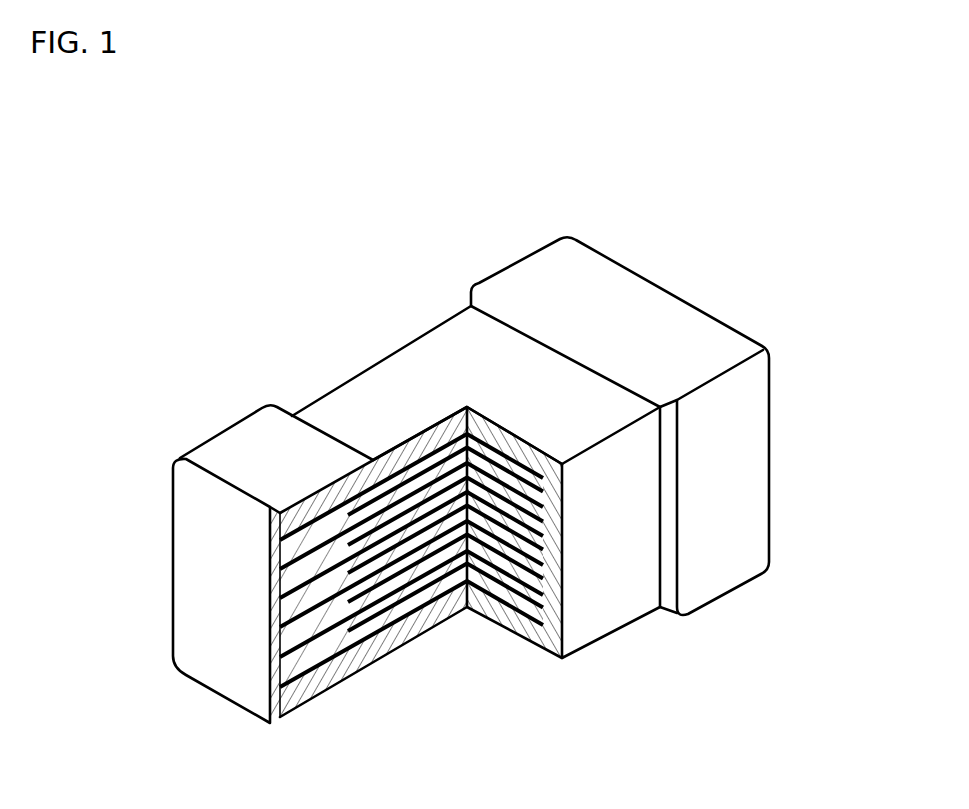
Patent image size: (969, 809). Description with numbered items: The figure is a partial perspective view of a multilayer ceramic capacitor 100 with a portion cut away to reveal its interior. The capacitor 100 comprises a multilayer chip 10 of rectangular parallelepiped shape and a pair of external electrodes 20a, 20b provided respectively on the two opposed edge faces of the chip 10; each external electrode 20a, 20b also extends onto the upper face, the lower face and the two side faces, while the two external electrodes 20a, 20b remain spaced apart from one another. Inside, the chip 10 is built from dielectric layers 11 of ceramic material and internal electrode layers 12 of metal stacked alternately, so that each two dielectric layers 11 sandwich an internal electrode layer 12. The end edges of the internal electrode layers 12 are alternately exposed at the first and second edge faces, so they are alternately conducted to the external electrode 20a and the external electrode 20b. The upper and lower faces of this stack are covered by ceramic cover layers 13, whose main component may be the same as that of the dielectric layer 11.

The multilayer ceramic capacitor 100 is at (867, 172).
The multilayer chip 10 is at (315, 402).
The dielectric layer 11 is at (390, 615).
The internal electrode layer 12 is at (355, 598).
The cover layer 13 is at (440, 348).
The external electrode 20a is at (202, 437).
The external electrode 20b is at (525, 278).